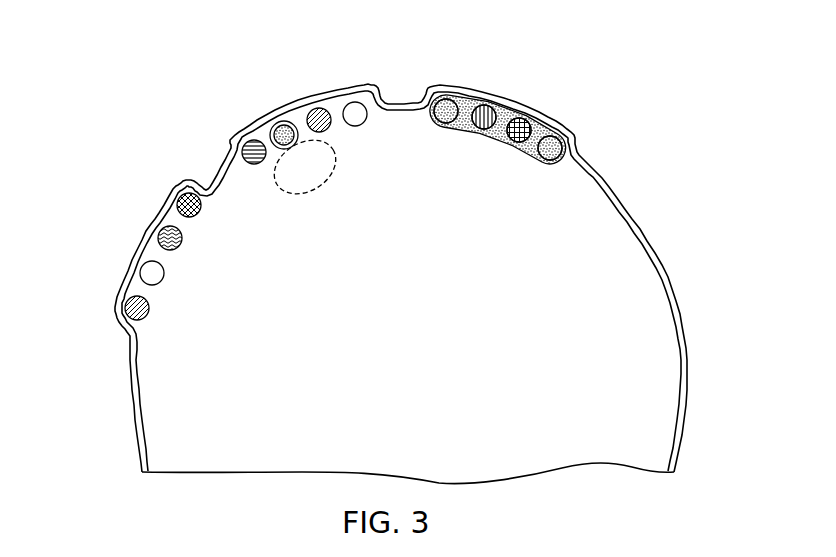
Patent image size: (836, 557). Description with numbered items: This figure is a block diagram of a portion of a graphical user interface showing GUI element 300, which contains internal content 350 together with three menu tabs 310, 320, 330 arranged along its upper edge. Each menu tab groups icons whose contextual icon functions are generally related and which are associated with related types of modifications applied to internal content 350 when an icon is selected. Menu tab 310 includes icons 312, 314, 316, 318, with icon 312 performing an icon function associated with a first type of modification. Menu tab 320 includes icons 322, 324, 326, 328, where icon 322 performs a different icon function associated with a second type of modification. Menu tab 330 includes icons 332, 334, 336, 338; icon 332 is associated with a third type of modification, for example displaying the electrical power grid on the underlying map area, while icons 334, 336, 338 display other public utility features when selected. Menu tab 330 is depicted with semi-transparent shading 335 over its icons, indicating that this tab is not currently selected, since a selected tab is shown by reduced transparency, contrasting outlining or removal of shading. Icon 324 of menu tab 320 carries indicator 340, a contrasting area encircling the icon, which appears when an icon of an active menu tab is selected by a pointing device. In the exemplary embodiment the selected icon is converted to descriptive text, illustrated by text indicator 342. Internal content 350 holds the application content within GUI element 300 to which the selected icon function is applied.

The GUI element 300 is at (682, 321).
The menu tab 310 is at (110, 308).
The icon 312 is at (124, 300).
The icon 314 is at (139, 268).
The icon 316 is at (157, 228).
The icon 318 is at (182, 192).
The menu tab 320 is at (227, 139).
The icon 322 is at (252, 139).
The icon 324 is at (283, 125).
The icon 326 is at (317, 108).
The icon 328 is at (354, 102).
The menu tab 330 is at (562, 125).
The icon 332 is at (444, 99).
The icon 334 is at (485, 106).
The semi-transparent shading 335 is at (522, 149).
The icon 336 is at (524, 120).
The icon 338 is at (574, 139).
The indicator 340 is at (276, 122).
The text indicator 342 is at (330, 182).
The internal content 350 is at (650, 421).